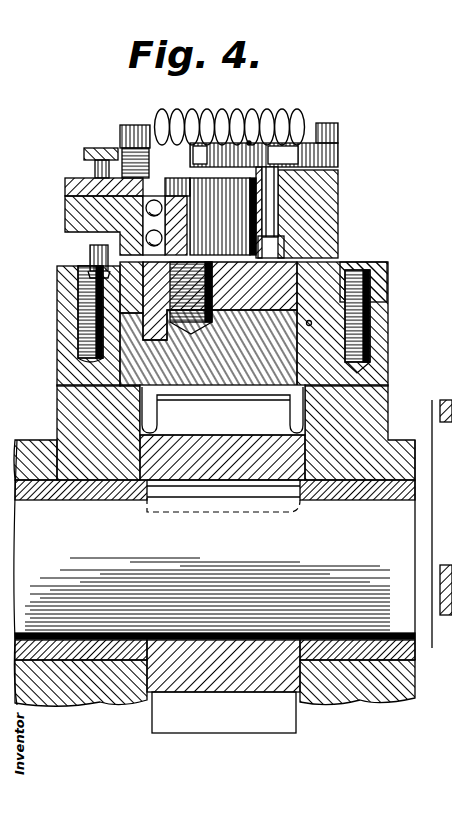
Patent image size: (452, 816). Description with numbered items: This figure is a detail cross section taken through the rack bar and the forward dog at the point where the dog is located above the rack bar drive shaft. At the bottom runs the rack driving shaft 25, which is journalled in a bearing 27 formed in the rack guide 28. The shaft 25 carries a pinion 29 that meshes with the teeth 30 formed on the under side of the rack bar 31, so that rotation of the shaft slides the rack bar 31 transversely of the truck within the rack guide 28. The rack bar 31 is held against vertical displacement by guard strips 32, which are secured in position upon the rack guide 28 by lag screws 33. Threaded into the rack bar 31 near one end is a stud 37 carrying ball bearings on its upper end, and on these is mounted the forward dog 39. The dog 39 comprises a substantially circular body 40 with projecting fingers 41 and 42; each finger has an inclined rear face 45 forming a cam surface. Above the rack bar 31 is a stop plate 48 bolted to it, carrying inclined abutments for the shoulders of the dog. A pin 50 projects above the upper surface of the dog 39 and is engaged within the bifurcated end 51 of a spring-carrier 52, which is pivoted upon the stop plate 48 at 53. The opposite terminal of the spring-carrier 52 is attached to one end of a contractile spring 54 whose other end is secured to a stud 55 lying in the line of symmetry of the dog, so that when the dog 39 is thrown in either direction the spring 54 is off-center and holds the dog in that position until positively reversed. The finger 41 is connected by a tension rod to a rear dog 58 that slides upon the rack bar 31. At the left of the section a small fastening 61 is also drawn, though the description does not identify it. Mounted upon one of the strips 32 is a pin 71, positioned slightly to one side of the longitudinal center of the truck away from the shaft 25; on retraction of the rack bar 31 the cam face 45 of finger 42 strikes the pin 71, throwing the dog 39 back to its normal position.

The rack driving shaft 25 is at (215, 573).
The bearing 27 is at (42, 447).
The rack guide 28 is at (77, 392).
The pinion 29 is at (223, 713).
The teeth 30 is at (276, 410).
The rack bar 31 is at (177, 360).
The guard strips 32 is at (120, 309).
The lag screws 33 is at (357, 268).
The stud 37 is at (300, 240).
The forward dog 39 is at (223, 216).
The body 40 is at (172, 182).
The finger 41 is at (67, 188).
The finger 42 is at (340, 243).
The inclined rear face 45 is at (73, 237).
The stop plate 48 is at (327, 184).
The pin 50 is at (228, 127).
The bifurcated end 51 is at (250, 142).
The spring-carrier 52 is at (306, 157).
The pivot 53 is at (280, 215).
The contractile spring 54 is at (183, 118).
The stud 55 is at (83, 292).
The rear dog 58 is at (152, 212).
The screw 61 is at (83, 158).
The pin 71 is at (90, 257).